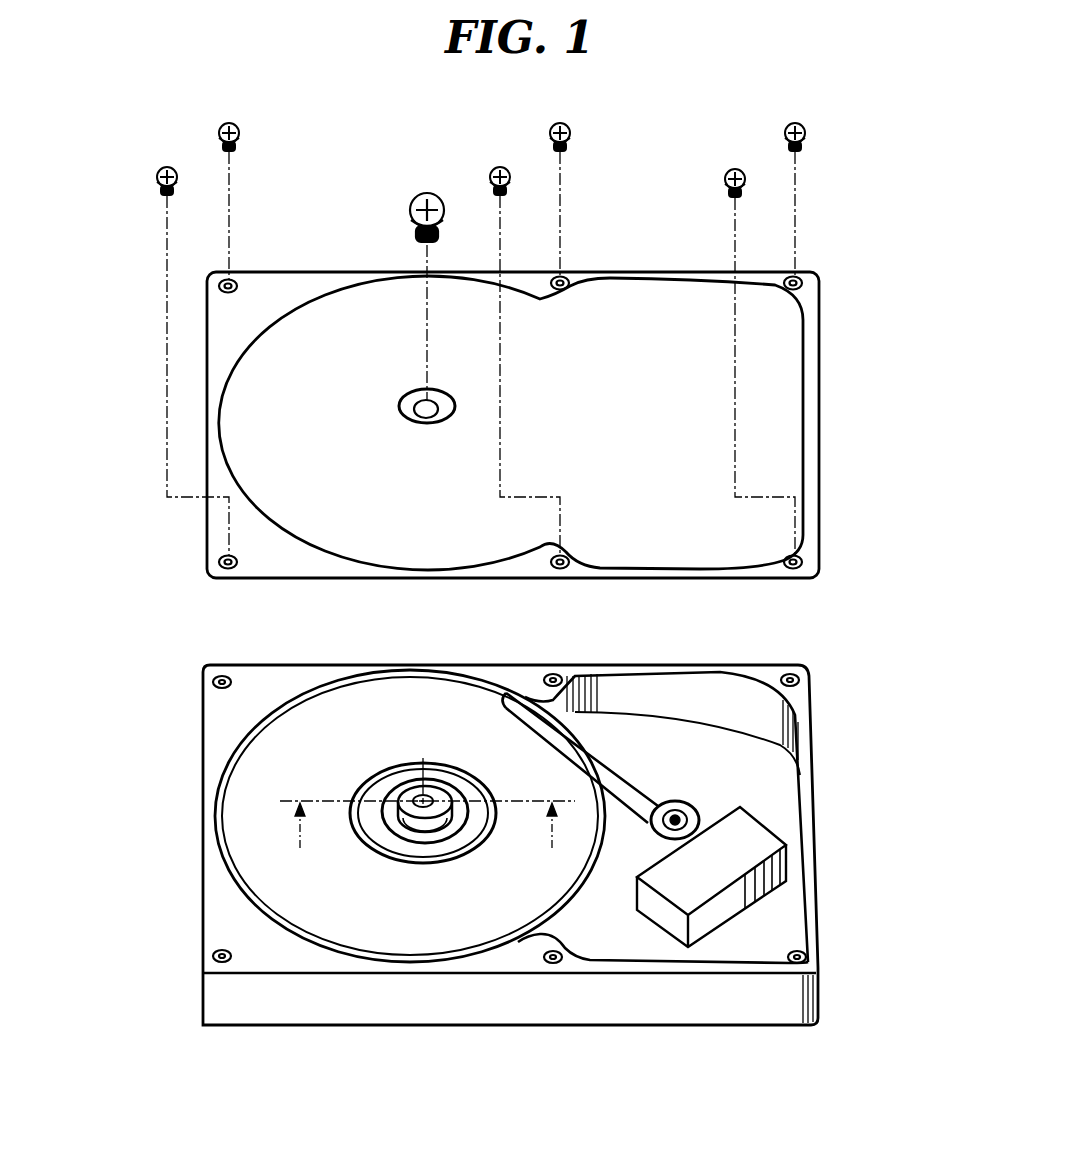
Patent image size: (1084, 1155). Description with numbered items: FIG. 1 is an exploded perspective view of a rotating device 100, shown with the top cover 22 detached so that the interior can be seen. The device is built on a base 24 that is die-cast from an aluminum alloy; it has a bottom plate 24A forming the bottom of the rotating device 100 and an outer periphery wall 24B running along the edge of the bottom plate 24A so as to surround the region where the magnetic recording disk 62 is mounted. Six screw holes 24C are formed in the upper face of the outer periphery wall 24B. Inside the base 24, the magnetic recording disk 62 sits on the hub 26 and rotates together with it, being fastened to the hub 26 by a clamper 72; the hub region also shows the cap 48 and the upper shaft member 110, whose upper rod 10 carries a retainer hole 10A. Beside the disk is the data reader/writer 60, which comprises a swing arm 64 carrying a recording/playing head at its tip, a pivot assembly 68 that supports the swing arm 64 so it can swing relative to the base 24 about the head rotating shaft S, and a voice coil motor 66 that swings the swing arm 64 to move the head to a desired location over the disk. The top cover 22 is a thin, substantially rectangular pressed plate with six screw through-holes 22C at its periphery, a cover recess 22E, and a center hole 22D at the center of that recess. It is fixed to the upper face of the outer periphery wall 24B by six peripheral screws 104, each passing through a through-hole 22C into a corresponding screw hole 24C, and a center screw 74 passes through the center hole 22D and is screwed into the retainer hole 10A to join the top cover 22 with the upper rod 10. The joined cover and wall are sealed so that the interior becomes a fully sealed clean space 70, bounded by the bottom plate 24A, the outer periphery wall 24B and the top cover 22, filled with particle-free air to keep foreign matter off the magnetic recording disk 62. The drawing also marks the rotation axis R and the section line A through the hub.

The rotating device 100 is at (373, 1088).
The top cover 22 is at (780, 367).
The screw through-holes 22C is at (236, 283).
The center hole 22D is at (435, 416).
The cover recess 22E is at (410, 415).
The peripheral screws 104 is at (157, 174).
The center screw 74 is at (408, 210).
The base 24 is at (668, 993).
The bottom plate 24A is at (740, 777).
The outer periphery wall 24B is at (802, 767).
The screw holes 24C is at (212, 680).
The clean space 70 is at (655, 737).
The magnetic recording disk 62 is at (307, 748).
The hub 26 is at (370, 838).
The cap 48 is at (387, 815).
The upper rod 10 is at (455, 822).
The clamper 72 is at (433, 848).
The retainer hole 10A is at (420, 788).
The upper shaft member 110 is at (443, 786).
The rotation axis R is at (422, 761).
The section line A- A is at (427, 843).
The data reader/writer 60 is at (722, 820).
The swing arm 64 is at (603, 767).
The pivot assembly 68 is at (690, 818).
The voice coil motor 66 is at (717, 867).
The head rotating shaft S is at (667, 823).